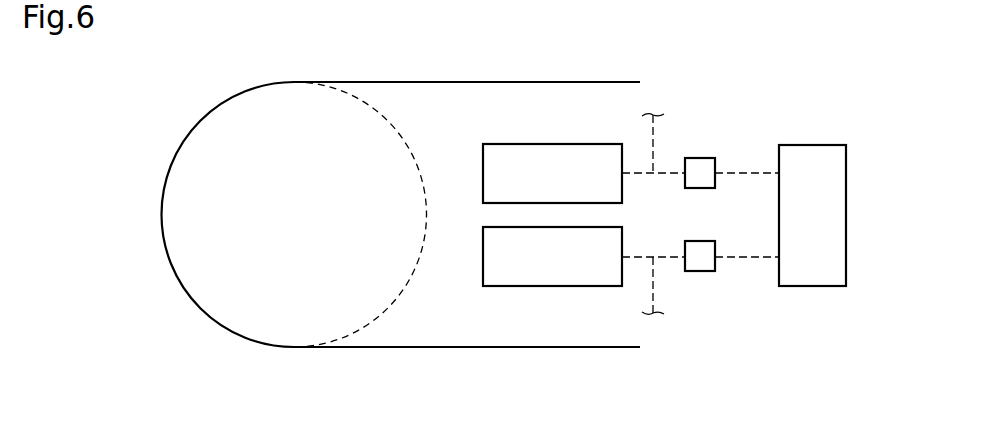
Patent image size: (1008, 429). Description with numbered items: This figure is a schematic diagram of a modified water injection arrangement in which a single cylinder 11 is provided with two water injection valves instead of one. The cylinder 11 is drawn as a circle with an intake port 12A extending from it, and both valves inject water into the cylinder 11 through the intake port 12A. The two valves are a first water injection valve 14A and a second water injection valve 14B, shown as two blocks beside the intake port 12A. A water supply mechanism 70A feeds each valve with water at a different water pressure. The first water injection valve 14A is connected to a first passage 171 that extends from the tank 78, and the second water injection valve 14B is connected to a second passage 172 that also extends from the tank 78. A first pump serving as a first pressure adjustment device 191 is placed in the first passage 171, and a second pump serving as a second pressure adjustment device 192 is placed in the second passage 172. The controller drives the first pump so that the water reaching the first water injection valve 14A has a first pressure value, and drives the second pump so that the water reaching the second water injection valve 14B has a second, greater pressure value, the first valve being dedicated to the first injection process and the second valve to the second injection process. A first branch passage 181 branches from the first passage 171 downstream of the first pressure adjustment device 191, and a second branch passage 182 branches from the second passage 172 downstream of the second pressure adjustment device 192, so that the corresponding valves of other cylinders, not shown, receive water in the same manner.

The cylinder 11 is at (222, 120).
The intake port 12A is at (476, 88).
The first water injection valve 14A is at (525, 143).
The second water injection valve 14B is at (528, 288).
The water supply mechanism 70A is at (821, 74).
The tank 78 is at (847, 214).
The first passage 171 is at (757, 172).
The second passage 172 is at (757, 259).
The first branch passage 181 is at (650, 137).
The second branch passage 182 is at (650, 293).
The first pressure adjustment device 191 is at (700, 157).
The second pressure adjustment device 192 is at (700, 273).